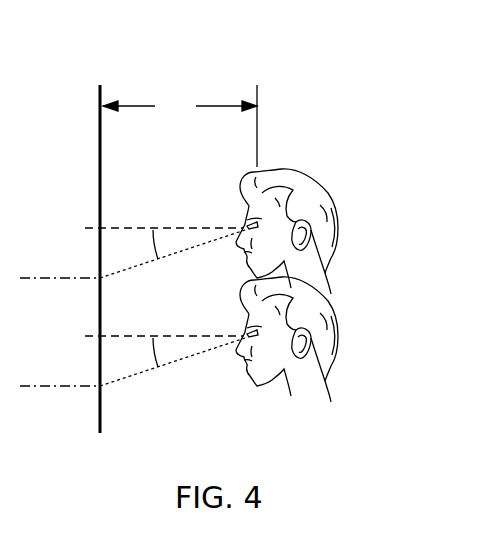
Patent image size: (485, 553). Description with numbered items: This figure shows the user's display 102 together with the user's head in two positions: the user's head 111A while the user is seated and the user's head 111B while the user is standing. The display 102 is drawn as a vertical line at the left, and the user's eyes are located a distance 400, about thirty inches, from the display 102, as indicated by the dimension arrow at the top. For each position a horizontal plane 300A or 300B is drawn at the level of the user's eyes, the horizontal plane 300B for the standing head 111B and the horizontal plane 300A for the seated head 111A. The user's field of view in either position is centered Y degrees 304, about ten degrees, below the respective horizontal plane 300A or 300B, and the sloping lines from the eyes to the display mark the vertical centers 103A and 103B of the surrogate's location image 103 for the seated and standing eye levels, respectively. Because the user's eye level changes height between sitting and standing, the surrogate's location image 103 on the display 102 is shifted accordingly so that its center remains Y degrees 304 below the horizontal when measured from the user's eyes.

The user's display 102 is at (100, 132).
The surrogate's location image 103 is at (122, 132).
The vertical center of the surrogate's location image (seated) 103A is at (36, 387).
The vertical center of the surrogate's location image (standing) 103B is at (36, 279).
The user's head (seated) 111A is at (325, 285).
The user's head (standing) 111B is at (320, 176).
The horizontal plane (seated) 300A is at (213, 335).
The horizontal plane (standing) 300B is at (200, 228).
The Y degrees 304 is at (156, 252).
The distance 400 is at (180, 126).